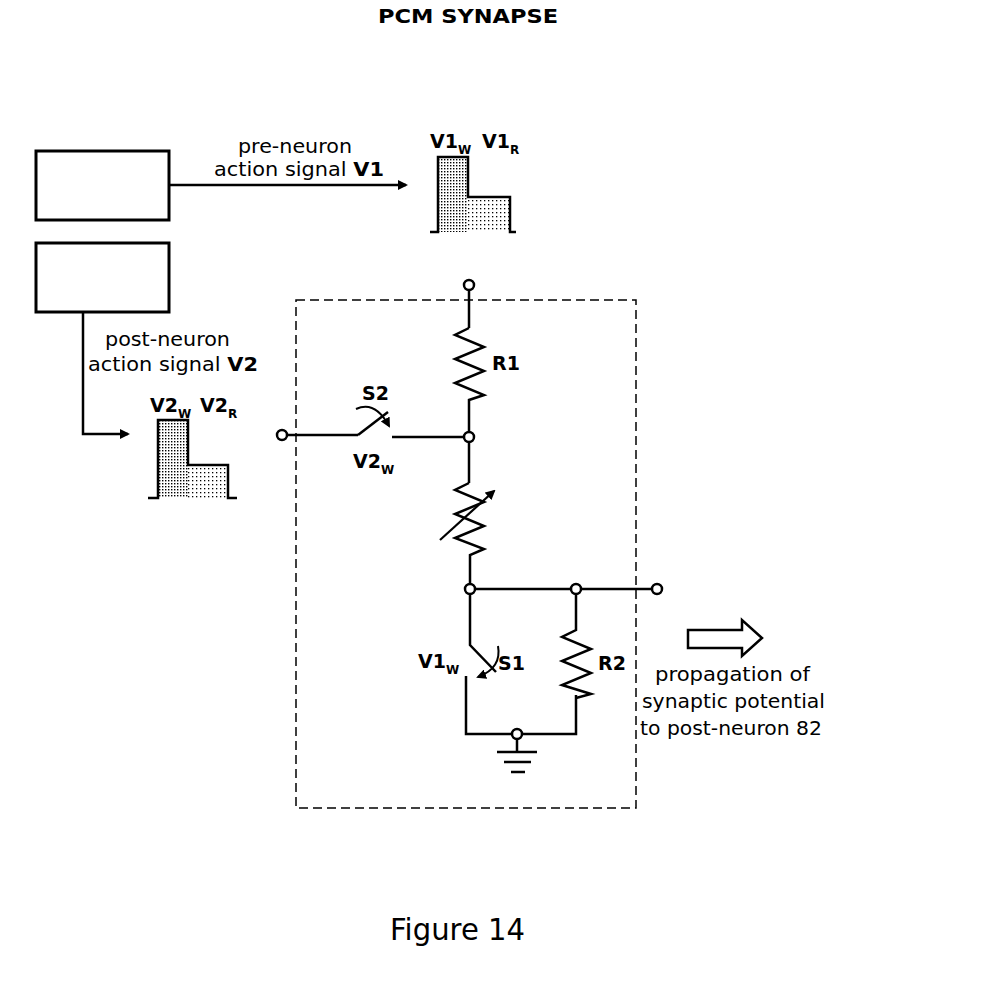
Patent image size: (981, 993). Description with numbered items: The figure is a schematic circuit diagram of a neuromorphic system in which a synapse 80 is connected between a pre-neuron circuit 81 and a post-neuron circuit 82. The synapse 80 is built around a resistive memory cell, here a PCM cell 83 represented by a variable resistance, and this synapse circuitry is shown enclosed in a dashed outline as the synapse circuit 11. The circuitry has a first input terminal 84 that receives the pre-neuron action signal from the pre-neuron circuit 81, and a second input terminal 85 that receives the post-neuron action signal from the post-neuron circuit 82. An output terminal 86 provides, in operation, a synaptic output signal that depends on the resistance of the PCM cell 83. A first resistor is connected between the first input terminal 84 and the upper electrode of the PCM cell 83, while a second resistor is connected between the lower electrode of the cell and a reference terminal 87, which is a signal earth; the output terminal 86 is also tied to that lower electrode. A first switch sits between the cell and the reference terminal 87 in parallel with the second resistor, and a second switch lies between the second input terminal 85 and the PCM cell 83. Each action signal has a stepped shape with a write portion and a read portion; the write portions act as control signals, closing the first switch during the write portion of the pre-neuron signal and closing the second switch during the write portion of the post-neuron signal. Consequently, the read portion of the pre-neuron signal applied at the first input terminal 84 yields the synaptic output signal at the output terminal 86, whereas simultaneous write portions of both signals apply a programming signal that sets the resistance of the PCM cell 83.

The synapse 80 is at (718, 165).
The pre-neuron circuit 81 is at (171, 163).
The post-neuron circuit 82 is at (171, 256).
The PCM synapse circuit 11 is at (585, 300).
The PCM cell 83 is at (512, 489).
The first input terminal 84 is at (475, 290).
The second input terminal 85 is at (284, 430).
The output terminal 86 is at (661, 584).
The reference terminal 87 is at (519, 729).